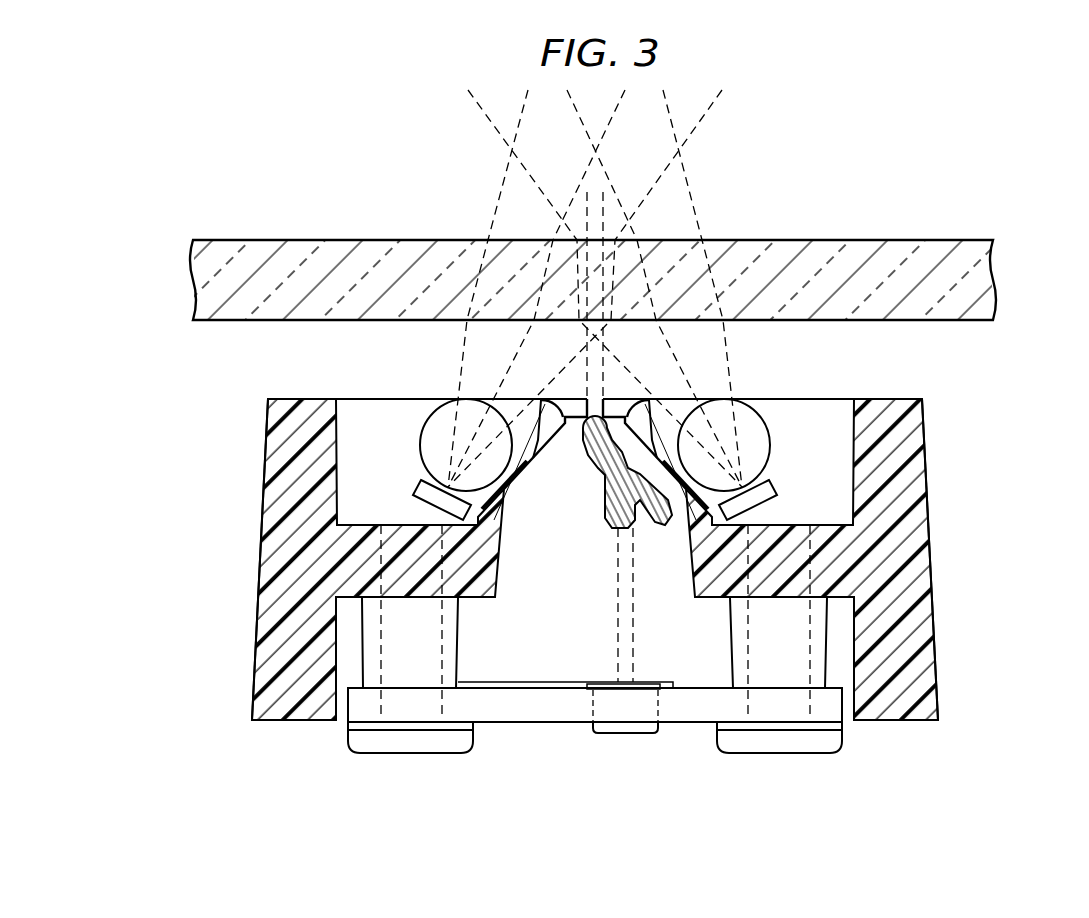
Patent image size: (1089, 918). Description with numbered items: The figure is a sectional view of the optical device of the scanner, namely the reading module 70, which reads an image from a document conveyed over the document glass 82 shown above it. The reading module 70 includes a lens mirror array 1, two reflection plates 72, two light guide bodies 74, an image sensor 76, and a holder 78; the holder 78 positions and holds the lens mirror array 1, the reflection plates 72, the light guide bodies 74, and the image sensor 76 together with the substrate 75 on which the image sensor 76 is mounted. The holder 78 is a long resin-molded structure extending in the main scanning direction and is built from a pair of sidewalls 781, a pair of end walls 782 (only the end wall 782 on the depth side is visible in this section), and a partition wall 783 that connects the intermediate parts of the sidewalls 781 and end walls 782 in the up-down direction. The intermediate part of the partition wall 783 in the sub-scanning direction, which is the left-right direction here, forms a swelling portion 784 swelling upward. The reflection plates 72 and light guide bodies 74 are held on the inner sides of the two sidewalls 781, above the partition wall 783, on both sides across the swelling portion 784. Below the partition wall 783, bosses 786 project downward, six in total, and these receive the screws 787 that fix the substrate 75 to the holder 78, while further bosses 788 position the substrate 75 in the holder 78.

The lens mirror array 1 is at (598, 493).
The reading module 70 is at (1001, 400).
The reflection plates 72 is at (420, 483).
The light guide bodies 74 is at (431, 431).
The substrate 75 is at (528, 712).
The image sensor 76 is at (650, 682).
The holder 78 is at (920, 550).
The document glass 82 is at (862, 250).
The sidewalls 781 is at (262, 518).
The end walls 782 is at (352, 656).
The partition wall 783 is at (478, 600).
The swelling portion 784 is at (700, 466).
The bosses 786 is at (460, 655).
The screws 787 is at (406, 746).
The bosses 788 is at (626, 736).